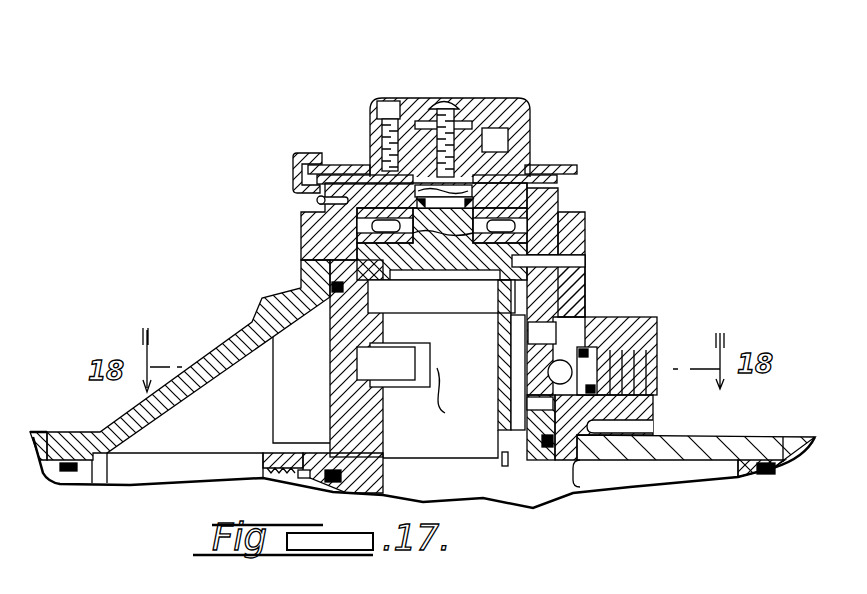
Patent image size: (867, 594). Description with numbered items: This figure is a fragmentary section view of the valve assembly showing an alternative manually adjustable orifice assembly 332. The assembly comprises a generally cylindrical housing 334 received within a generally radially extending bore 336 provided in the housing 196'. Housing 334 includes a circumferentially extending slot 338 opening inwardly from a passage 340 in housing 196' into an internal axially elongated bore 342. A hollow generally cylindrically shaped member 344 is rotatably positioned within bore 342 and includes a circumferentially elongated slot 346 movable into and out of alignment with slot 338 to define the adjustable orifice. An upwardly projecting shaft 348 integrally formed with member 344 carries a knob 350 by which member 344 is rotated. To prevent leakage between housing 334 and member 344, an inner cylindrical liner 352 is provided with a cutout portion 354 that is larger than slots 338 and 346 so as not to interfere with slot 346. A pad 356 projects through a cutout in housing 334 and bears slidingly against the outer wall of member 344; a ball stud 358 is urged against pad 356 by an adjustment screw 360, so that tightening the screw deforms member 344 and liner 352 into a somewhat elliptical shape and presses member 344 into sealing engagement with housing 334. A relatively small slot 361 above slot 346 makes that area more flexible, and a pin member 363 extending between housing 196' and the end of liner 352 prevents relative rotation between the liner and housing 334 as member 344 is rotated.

The knob 350 is at (522, 98).
The shaft 348 is at (480, 158).
The hollow generally cylindrically shaped member 344 is at (557, 205).
The housing 334 is at (573, 223).
The manually adjustable orifice assembly 332 is at (620, 280).
The internal axially elongated bore 342 is at (357, 250).
The slot 361 is at (432, 314).
The inner cylindrical liner 352 is at (503, 328).
The circumferentially elongated slot 346 is at (368, 357).
The ball stud 358 is at (550, 370).
The cutout portion 354 is at (458, 397).
The circumferentially extending slot 338 is at (340, 373).
The passage 340 is at (244, 432).
The pad 356 is at (575, 325).
The adjustment screw 360 is at (648, 360).
The radially extending bore 336 is at (557, 440).
The pin member 363 is at (497, 460).
The housing 196' is at (694, 438).